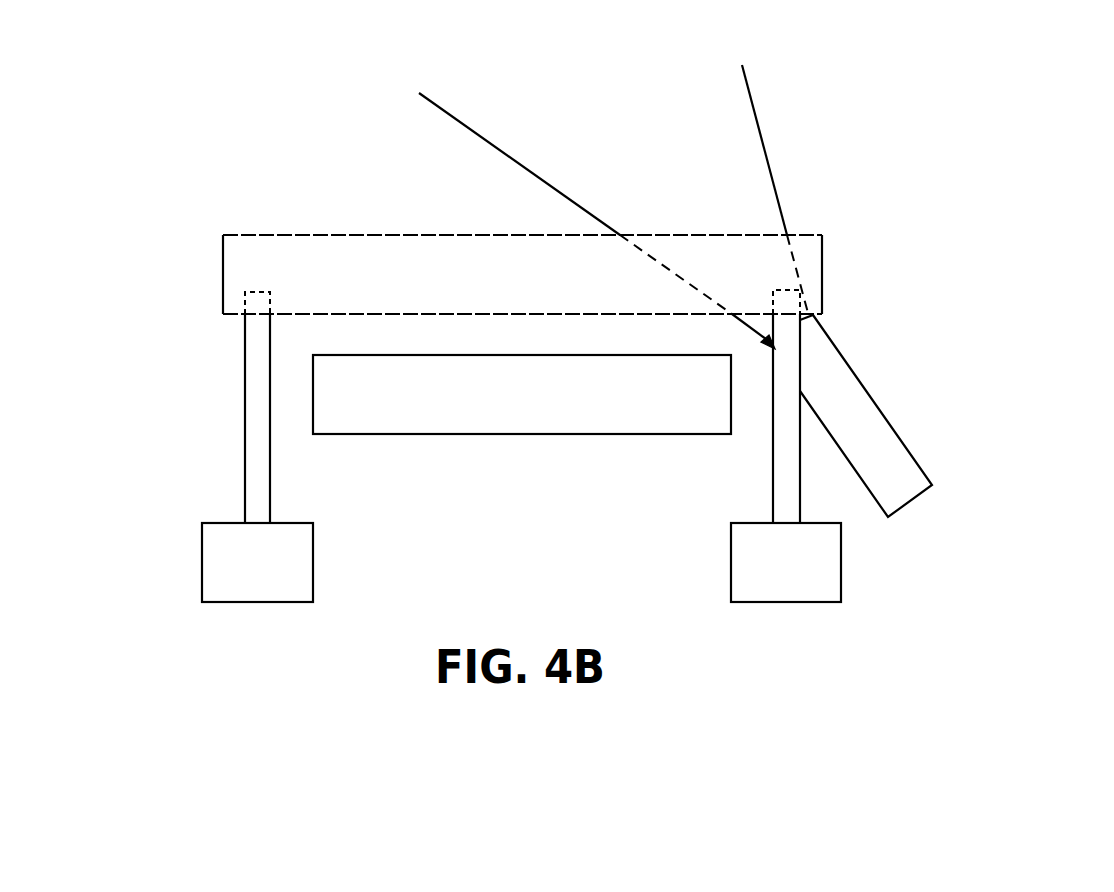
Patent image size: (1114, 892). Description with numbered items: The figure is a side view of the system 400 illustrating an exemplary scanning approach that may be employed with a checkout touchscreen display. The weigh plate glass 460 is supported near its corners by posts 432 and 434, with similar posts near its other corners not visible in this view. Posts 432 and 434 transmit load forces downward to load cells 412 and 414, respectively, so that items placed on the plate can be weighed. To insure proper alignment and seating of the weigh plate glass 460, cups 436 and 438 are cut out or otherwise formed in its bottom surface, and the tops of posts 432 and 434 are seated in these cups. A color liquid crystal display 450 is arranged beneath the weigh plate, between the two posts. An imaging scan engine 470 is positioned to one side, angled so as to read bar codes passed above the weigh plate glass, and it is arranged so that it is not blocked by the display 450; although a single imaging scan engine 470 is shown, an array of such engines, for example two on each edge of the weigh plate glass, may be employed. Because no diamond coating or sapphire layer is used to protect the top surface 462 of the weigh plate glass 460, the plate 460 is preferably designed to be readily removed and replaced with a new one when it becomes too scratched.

The system 400 is at (878, 110).
The load cell 412 is at (250, 604).
The load cell 414 is at (797, 604).
The post 432 is at (244, 400).
The post 434 is at (772, 455).
The cup 436 is at (258, 290).
The cup 438 is at (787, 302).
The color liquid crystal display (LCD) 450 is at (411, 418).
The weigh plate glass 460 is at (310, 257).
The top surface 462 is at (480, 234).
The imaging scan engine 470 is at (877, 402).